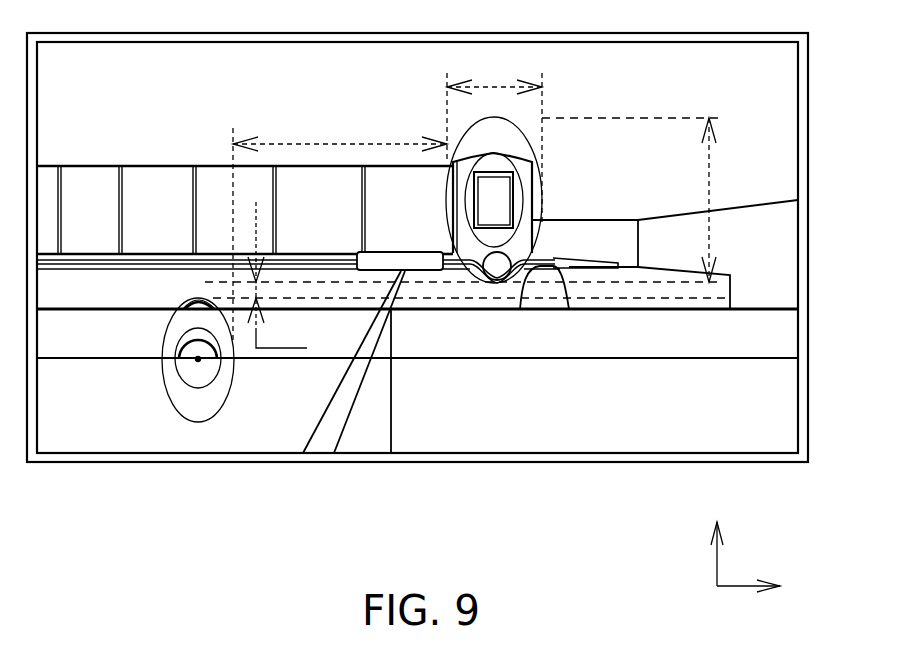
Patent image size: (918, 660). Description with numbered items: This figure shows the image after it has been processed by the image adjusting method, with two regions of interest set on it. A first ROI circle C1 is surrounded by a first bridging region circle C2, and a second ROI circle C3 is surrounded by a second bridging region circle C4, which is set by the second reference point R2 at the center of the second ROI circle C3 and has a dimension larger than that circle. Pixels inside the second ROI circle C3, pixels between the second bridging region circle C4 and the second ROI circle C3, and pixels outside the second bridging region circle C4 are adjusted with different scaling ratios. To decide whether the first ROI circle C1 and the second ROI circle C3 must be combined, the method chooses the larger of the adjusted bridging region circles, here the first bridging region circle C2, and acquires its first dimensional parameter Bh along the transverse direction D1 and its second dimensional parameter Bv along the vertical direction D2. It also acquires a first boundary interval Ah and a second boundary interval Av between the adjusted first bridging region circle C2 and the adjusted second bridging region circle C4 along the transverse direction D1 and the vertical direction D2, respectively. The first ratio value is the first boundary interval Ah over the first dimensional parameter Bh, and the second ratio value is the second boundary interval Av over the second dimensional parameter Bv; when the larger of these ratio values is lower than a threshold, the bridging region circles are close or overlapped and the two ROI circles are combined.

The first ROI circle C1 is at (515, 208).
The first bridging region circle C2 is at (541, 156).
The second ROI circle C3 is at (183, 339).
The second bridging region circle C4 is at (197, 422).
The second reference point R2 is at (196, 364).
The first boundary interval Ah is at (340, 226).
The second boundary interval Av is at (467, 276).
The first dimensional parameter Bh is at (494, 139).
The second dimensional parameter Bv is at (632, 200).
The transverse direction D1 is at (762, 573).
The vertical direction D2 is at (693, 544).